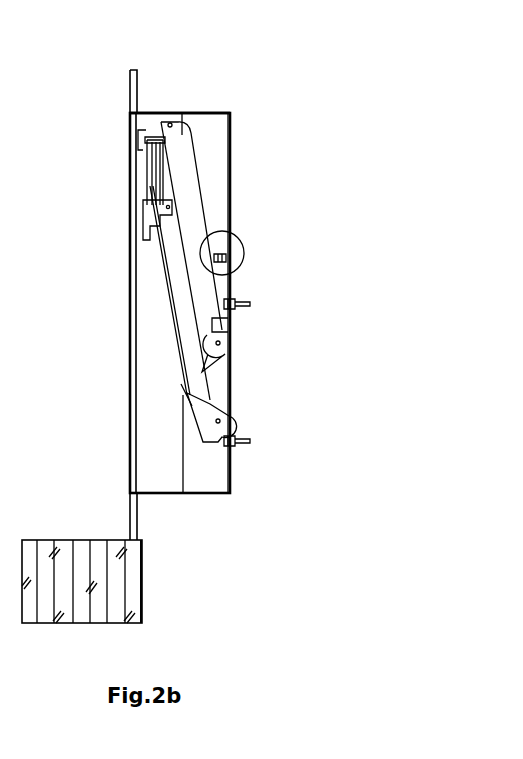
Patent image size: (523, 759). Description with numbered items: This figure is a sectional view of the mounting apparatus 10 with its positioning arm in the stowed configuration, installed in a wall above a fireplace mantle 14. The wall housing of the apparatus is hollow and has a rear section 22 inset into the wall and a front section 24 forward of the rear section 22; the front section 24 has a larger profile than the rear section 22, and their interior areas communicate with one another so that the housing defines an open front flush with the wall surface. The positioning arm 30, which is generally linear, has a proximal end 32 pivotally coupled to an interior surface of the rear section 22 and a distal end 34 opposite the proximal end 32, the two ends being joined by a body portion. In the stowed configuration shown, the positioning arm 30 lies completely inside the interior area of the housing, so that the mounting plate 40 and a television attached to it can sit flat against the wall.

The mounting apparatus 10 is at (324, 142).
The rear section 22 is at (222, 113).
The front section 24 is at (160, 113).
The mounting plate 40 is at (152, 173).
The distal end 34 is at (147, 208).
The positioning arm 30 is at (180, 331).
The proximal end 32 is at (213, 404).
The fireplace mantle 14 is at (80, 608).